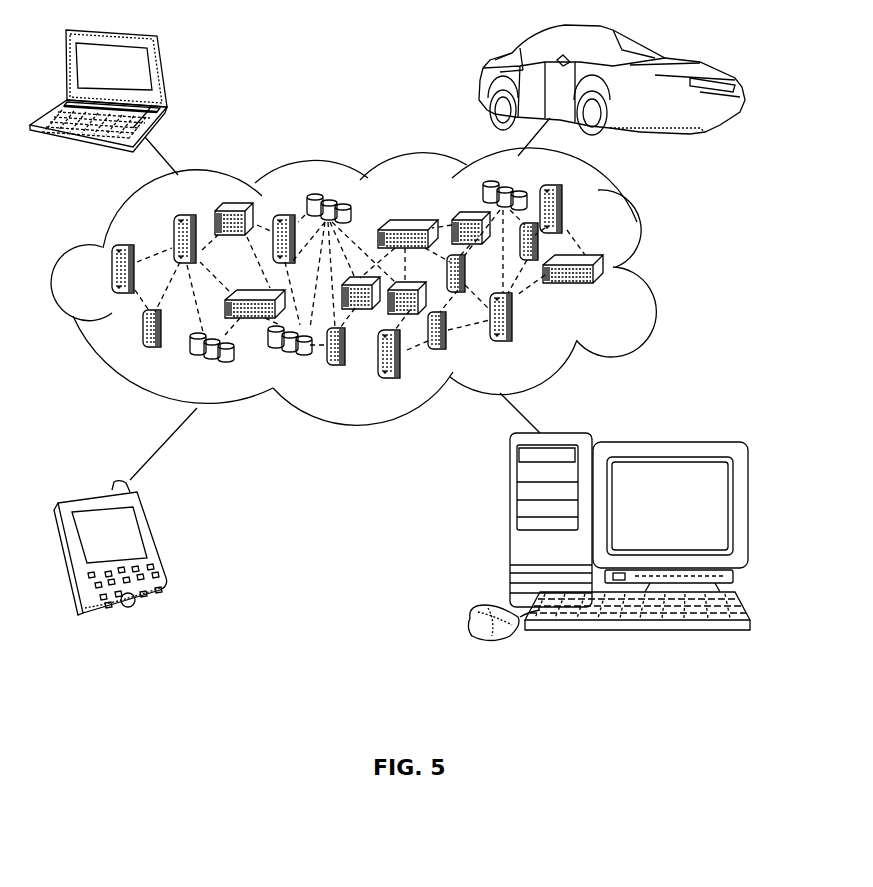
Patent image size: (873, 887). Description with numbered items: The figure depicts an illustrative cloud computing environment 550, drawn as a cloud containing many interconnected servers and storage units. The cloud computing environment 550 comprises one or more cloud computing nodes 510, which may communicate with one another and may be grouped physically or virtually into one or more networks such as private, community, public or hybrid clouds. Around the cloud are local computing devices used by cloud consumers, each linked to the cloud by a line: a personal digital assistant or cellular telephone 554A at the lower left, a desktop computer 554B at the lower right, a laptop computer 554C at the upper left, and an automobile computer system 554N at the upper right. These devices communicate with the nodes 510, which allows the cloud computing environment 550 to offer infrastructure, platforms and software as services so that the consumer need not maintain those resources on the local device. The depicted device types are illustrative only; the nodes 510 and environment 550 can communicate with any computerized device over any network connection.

The cloud computing nodes 510 is at (392, 333).
The cloud computing environment 550 is at (643, 237).
The personal digital assistant or cellular telephone 554A is at (153, 543).
The desktop computer 554B is at (510, 527).
The laptop computer 554C is at (163, 70).
The automobile computer system 554N is at (490, 73).